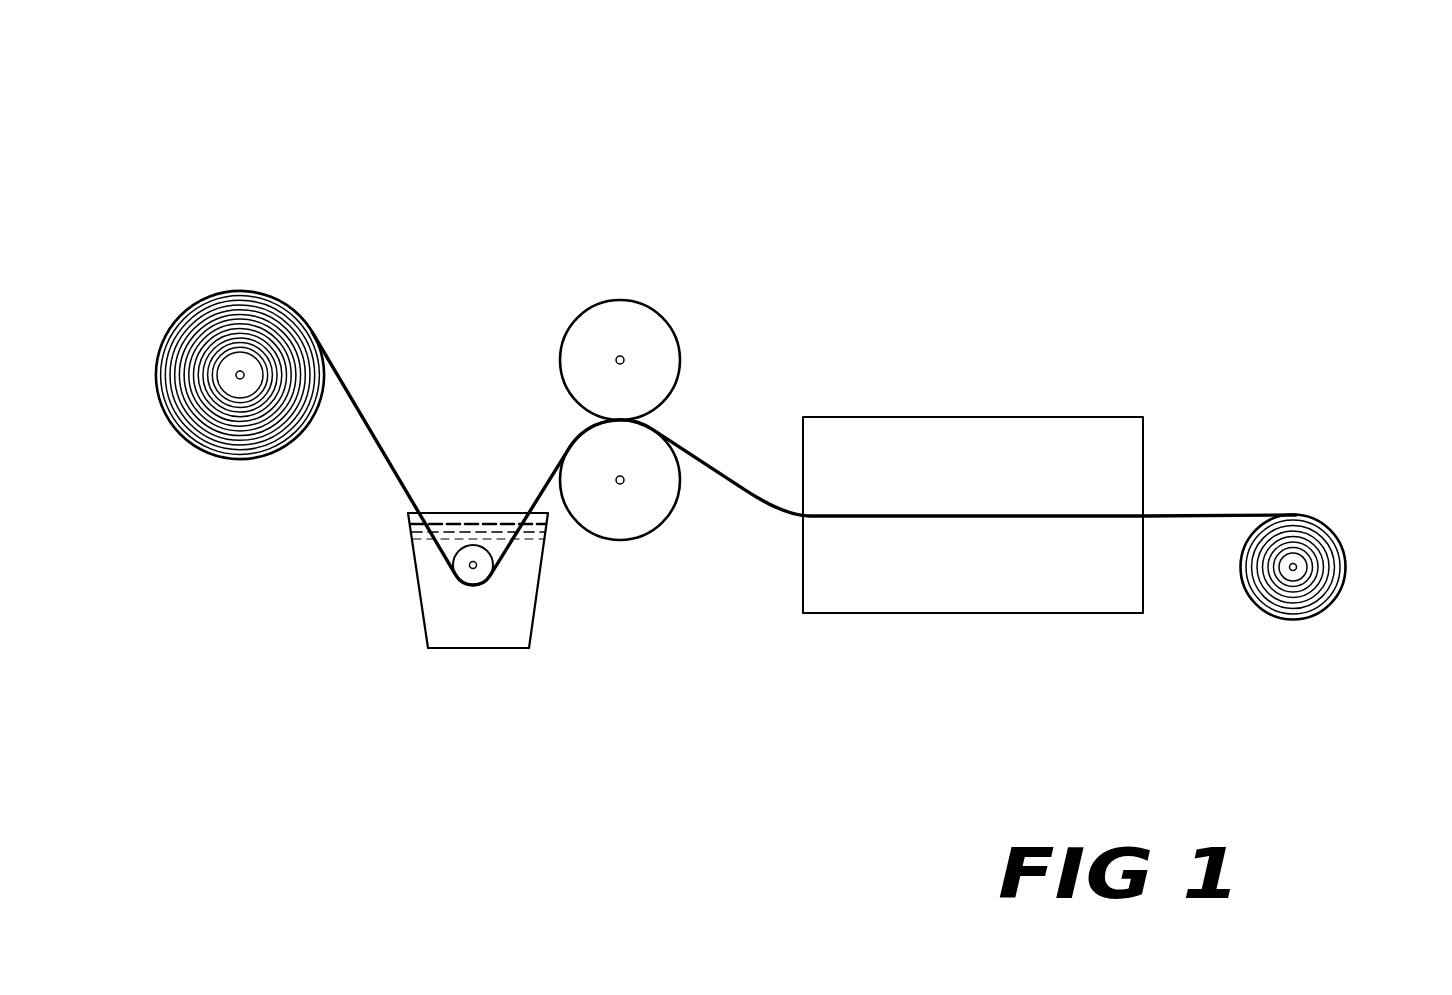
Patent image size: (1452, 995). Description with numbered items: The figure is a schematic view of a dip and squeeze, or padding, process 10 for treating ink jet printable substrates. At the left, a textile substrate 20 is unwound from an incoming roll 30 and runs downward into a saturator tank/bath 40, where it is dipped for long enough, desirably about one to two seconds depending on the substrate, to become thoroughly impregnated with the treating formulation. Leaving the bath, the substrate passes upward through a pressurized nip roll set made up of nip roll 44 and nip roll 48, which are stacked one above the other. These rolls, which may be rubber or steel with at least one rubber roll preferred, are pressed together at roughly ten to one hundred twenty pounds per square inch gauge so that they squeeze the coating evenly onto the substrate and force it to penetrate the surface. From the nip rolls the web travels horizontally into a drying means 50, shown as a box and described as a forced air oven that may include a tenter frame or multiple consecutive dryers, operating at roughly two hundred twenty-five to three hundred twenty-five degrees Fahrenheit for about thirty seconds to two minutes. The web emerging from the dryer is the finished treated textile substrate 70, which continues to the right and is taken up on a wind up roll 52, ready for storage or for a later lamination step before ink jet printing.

The dip and squeeze (padding) process 10 is at (480, 158).
The textile substrate 20 is at (340, 372).
The incoming roll 30 is at (218, 302).
The saturator tank/bath 40 is at (428, 648).
The nip roll 44 is at (617, 325).
The nip roll 48 is at (633, 515).
The drying means 50 is at (1063, 459).
The wind up roll 52 is at (1312, 530).
The finished treated textile substrate 70 is at (1187, 514).